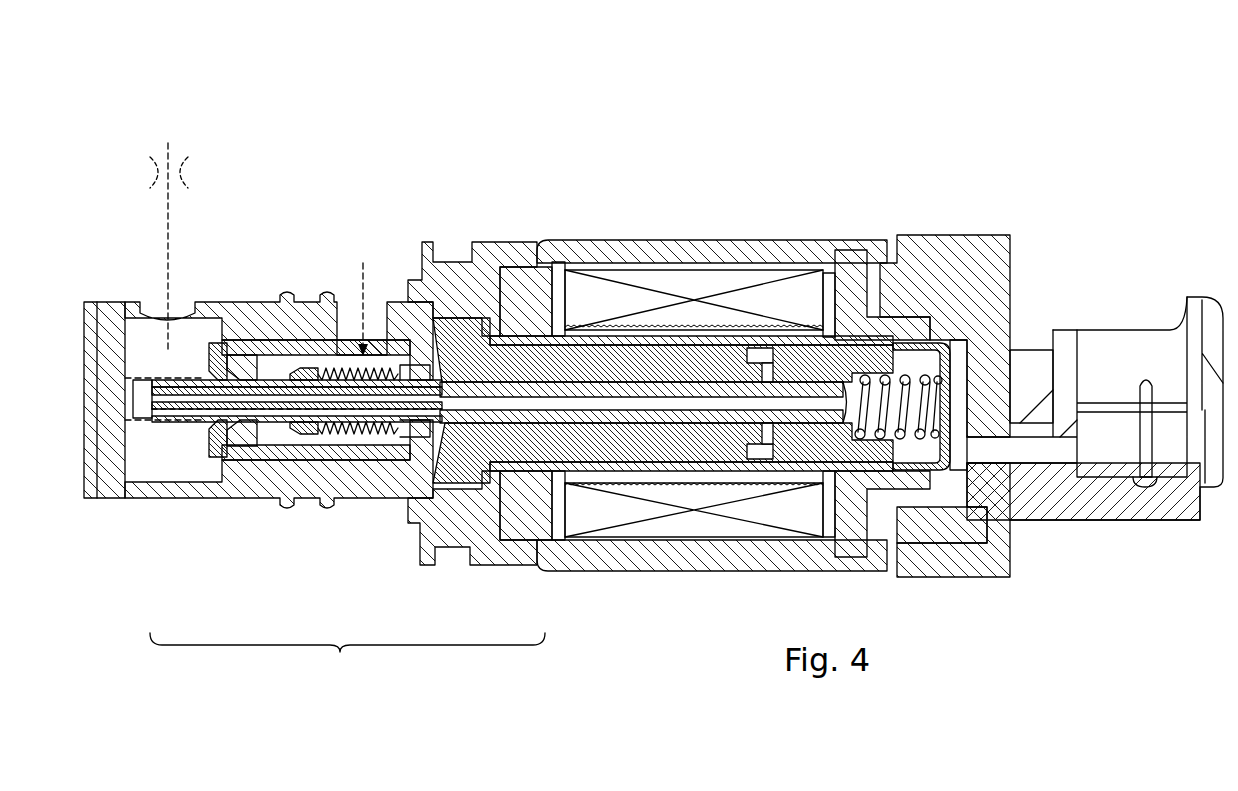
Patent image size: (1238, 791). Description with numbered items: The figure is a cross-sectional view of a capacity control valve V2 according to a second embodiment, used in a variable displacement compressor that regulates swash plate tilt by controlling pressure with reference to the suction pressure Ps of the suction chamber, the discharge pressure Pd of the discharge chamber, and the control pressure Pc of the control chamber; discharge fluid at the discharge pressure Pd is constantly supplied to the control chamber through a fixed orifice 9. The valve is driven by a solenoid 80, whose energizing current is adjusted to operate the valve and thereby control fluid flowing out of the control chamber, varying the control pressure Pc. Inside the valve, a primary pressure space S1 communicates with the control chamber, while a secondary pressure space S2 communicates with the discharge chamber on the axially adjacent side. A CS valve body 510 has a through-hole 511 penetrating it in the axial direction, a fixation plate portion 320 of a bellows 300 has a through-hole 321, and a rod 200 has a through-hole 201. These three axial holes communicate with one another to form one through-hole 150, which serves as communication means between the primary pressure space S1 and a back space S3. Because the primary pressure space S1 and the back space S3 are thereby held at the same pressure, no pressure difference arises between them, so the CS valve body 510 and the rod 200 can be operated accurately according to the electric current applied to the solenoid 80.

The capacity control valve V2 is at (1087, 112).
The fixed orifice 9 is at (186, 168).
The solenoid 80 is at (806, 188).
The through-hole 150 is at (347, 658).
The rod 200 is at (612, 358).
The through-hole 201 is at (512, 410).
The bellows 300 is at (358, 298).
The fixation plate portion 320 is at (315, 366).
The through-hole 321 is at (300, 410).
The CS valve body 510 is at (199, 354).
The through-hole 511 is at (183, 412).
The primary pressure space S1 is at (164, 346).
The secondary pressure space S2 is at (273, 354).
The back space S3 is at (744, 355).
The discharge pressure Pd is at (168, 235).
The control pressure Pc is at (167, 275).
The suction pressure Ps is at (360, 298).